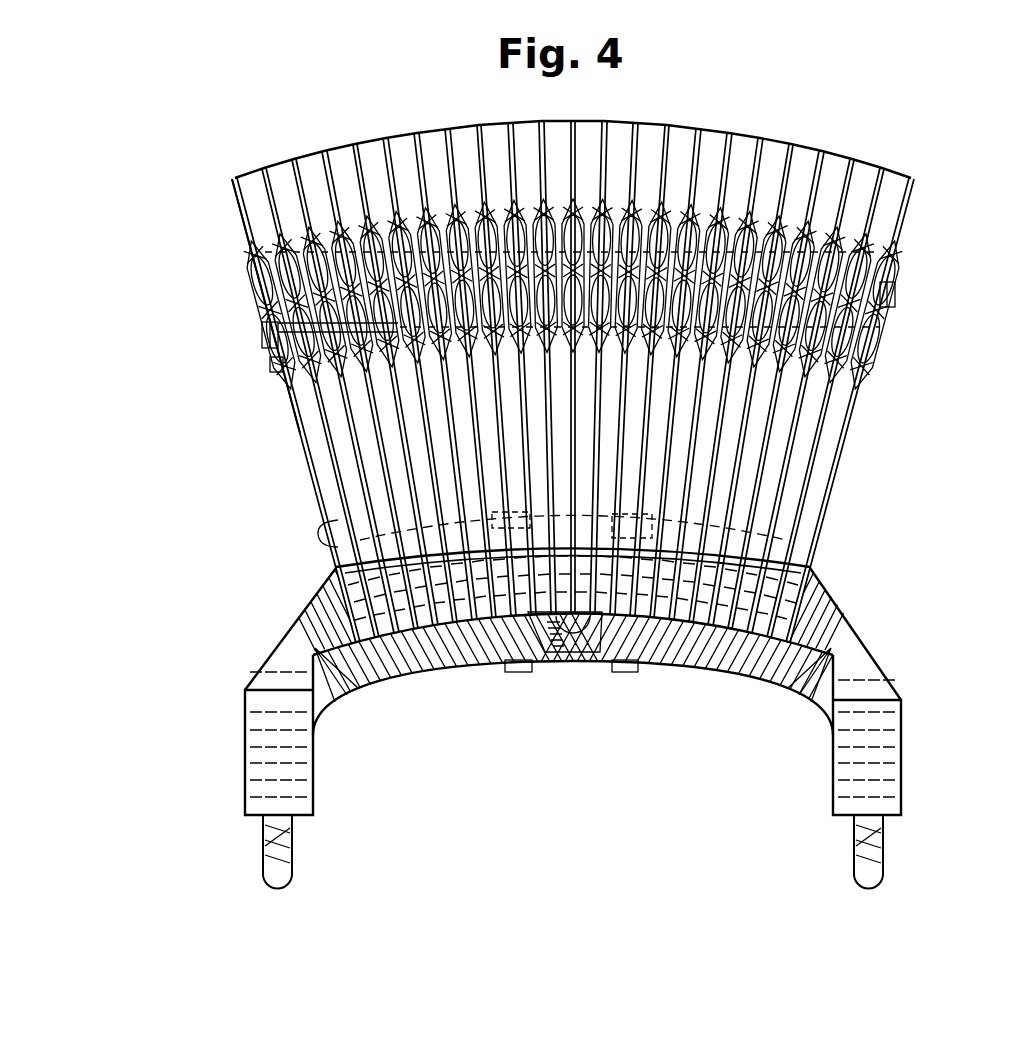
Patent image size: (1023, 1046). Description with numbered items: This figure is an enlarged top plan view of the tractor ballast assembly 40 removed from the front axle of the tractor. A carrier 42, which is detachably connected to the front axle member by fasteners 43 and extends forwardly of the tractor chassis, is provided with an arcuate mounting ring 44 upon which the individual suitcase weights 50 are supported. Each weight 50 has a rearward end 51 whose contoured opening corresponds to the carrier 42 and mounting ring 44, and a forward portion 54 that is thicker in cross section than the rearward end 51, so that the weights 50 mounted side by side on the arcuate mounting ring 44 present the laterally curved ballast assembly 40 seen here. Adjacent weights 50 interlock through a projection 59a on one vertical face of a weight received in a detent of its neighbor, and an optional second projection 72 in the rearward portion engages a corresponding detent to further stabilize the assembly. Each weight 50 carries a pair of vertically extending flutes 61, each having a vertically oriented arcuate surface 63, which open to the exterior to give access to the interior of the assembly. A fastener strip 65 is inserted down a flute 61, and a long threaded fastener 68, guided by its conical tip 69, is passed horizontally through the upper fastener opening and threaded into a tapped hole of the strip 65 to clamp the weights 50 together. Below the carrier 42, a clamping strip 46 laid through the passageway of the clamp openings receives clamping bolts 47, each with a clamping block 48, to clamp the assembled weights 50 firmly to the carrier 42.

The tractor ballast assembly 40 is at (252, 108).
The carrier 42 is at (900, 745).
The fasteners 43 is at (262, 848).
The arcuate mounting ring 44 is at (832, 598).
The clamping strip 46 is at (500, 518).
The clamping bolt 47 is at (614, 672).
The clamping block 48 is at (500, 660).
The suitcase weight 50 is at (574, 359).
The rearward end 51 is at (318, 563).
The forward portion 54 is at (232, 215).
The projection 59a is at (272, 372).
The flutes 61 is at (241, 278).
The arcuate surface 63 is at (272, 288).
The fastener strip 65 is at (690, 340).
The threaded fastener 68 is at (262, 335).
The conical tip 69 is at (690, 300).
The second projection 72 is at (320, 525).